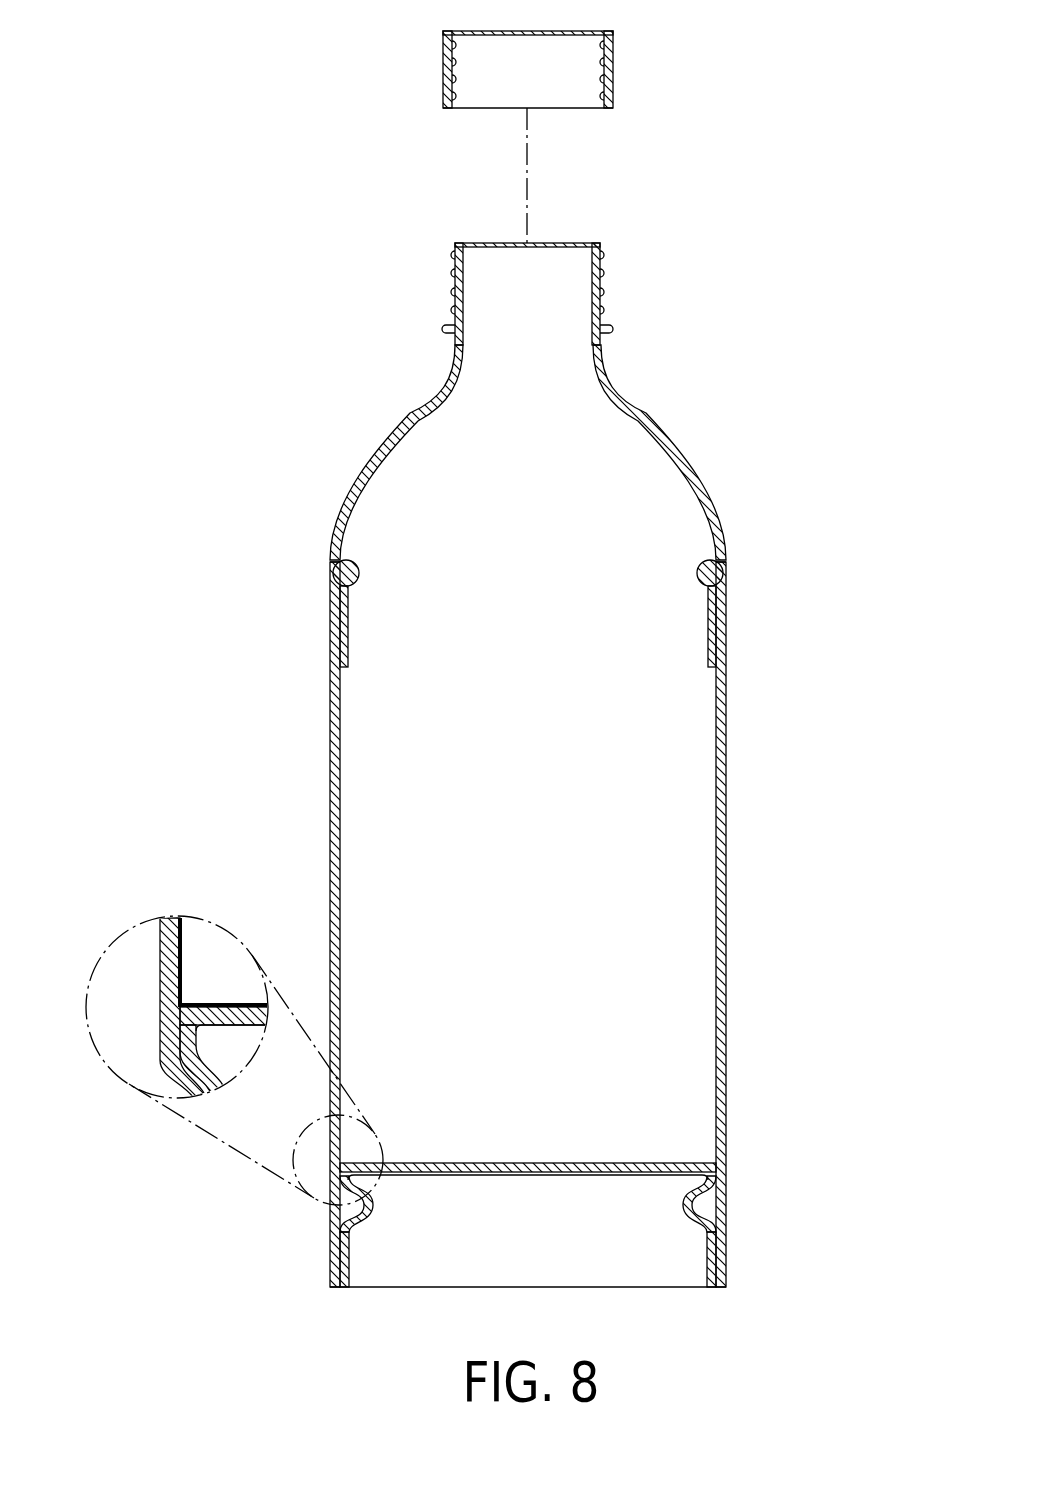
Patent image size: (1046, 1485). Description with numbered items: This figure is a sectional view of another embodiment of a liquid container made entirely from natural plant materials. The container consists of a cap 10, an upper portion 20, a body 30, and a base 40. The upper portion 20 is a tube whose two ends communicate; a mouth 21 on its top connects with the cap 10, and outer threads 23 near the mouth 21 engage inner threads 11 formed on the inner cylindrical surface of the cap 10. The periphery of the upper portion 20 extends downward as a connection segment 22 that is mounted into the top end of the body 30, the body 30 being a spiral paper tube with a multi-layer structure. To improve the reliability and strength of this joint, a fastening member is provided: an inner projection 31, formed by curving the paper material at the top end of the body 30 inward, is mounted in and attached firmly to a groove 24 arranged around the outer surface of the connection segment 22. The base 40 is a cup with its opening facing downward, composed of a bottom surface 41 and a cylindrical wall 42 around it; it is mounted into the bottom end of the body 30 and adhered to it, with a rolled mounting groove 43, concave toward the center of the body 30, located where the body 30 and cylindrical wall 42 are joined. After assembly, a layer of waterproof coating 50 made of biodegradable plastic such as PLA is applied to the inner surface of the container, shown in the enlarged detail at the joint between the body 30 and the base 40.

The cap 10 is at (440, 71).
The inner threads 11 is at (597, 90).
The upper portion 20 is at (672, 424).
The mouth 21 is at (491, 250).
The connection segment 22 is at (348, 634).
The outer threads 23 is at (606, 276).
The groove 24 is at (360, 567).
The body 30 is at (728, 834).
The inner projection 31 is at (340, 575).
The base 40 is at (423, 1264).
The bottom surface 41 is at (530, 1163).
The cylindrical wall 42 is at (708, 1255).
The mounting groove 43 is at (721, 1205).
The waterproof coating 50 is at (188, 933).